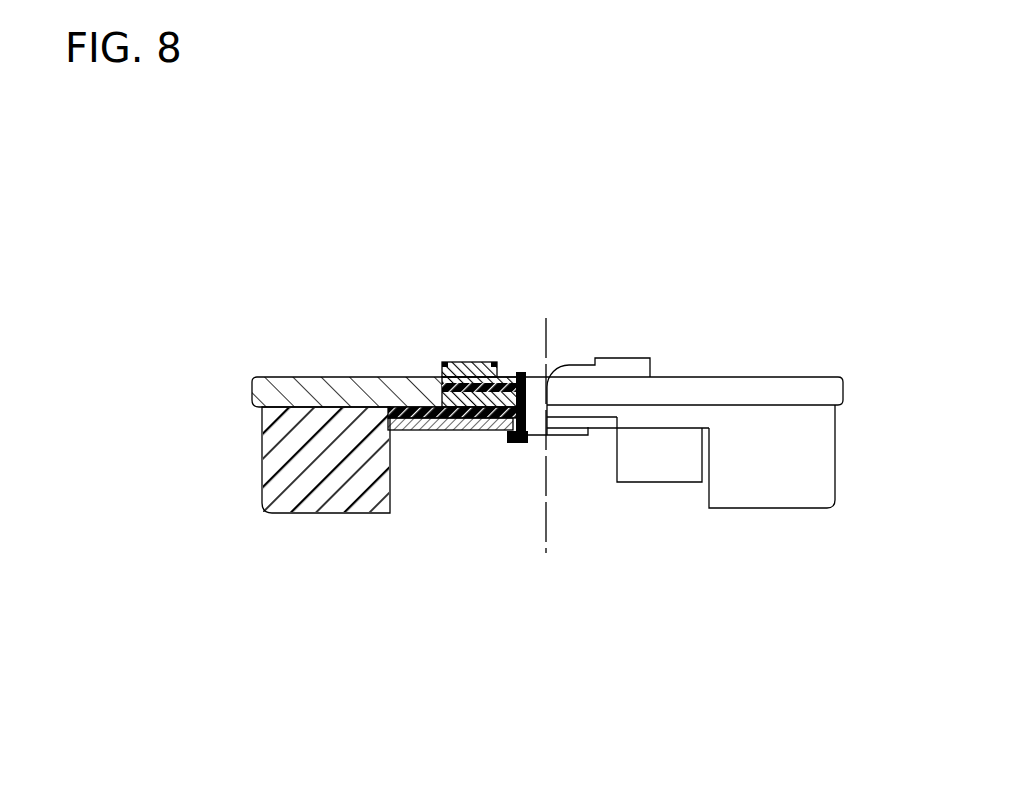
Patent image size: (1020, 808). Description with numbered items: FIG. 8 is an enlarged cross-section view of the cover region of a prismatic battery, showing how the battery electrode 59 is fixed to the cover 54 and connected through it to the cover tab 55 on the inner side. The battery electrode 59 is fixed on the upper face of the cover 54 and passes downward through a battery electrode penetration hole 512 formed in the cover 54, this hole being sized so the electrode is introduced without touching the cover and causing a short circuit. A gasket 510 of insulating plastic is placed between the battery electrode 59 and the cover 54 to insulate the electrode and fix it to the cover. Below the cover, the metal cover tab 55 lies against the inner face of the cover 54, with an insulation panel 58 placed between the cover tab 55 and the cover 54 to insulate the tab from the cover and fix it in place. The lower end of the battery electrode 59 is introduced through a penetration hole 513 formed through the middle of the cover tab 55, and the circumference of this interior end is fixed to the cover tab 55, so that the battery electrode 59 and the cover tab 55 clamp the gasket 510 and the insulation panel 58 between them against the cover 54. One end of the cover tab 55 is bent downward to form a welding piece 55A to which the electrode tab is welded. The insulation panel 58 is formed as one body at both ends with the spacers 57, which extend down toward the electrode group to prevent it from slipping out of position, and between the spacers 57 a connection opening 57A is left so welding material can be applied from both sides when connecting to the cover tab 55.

The cover 54 is at (290, 386).
The cover tab 55 is at (444, 430).
The welding piece 55A is at (677, 472).
The spacers 57 is at (312, 500).
The connection opening 57A is at (587, 475).
The insulation panel 58 is at (410, 400).
The battery electrode 59 is at (492, 372).
The gasket 510 is at (447, 361).
The battery electrode penetration hole 512 is at (572, 370).
The penetration hole 513 is at (523, 443).